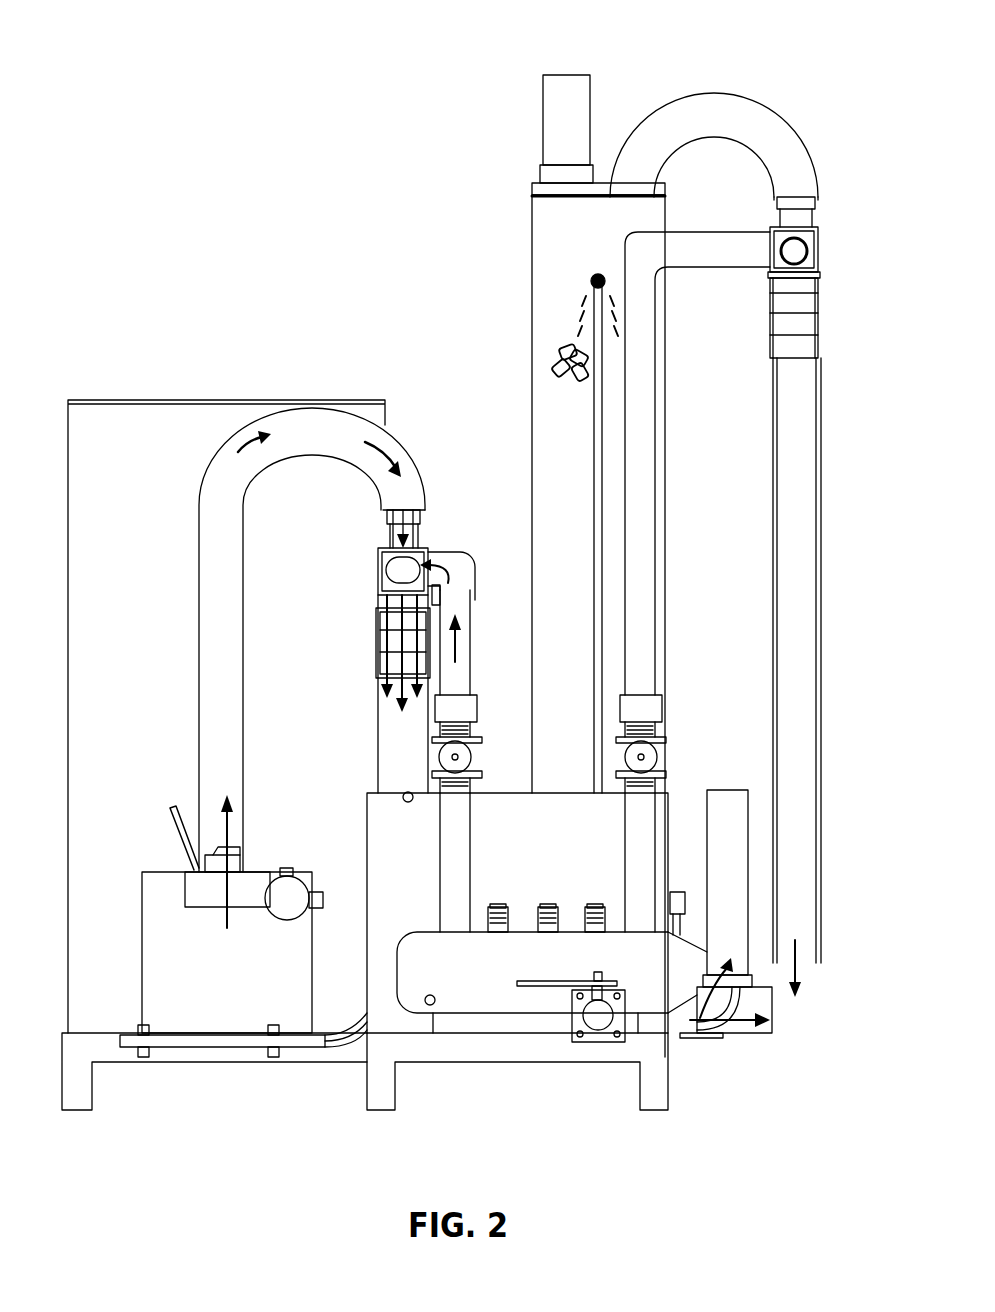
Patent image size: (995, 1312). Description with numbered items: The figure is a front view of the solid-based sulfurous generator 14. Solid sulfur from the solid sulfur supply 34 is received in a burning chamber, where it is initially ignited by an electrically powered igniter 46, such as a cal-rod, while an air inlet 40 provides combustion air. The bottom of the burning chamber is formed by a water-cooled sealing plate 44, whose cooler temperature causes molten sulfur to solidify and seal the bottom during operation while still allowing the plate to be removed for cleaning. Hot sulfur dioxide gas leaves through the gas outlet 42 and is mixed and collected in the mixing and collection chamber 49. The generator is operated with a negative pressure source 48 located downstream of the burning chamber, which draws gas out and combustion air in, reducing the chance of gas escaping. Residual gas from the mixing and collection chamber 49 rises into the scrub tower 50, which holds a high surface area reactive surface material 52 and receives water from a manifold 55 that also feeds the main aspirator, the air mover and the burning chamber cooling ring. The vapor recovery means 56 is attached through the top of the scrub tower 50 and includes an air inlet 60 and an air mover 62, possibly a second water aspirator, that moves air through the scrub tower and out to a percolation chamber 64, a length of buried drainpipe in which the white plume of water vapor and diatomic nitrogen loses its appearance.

The solid-based sulfurous generator 14 is at (208, 70).
The solid sulfur supply 34 is at (132, 524).
The air inlet 40 is at (302, 912).
The gas outlet 42 is at (241, 648).
The water-cooled sealing plate 44 is at (222, 1040).
The electrically powered igniter 46 is at (176, 832).
The negative pressure source 48 is at (435, 535).
The mixing and collection chamber 49 is at (574, 848).
The scrub tower 50 is at (592, 243).
The reactive surface material 52 is at (560, 358).
The manifold 55 is at (459, 983).
The vapor recovery means 56 is at (712, 125).
The air inlet 60 is at (556, 100).
The air mover 62 is at (800, 251).
The percolation chamber 64 is at (805, 982).